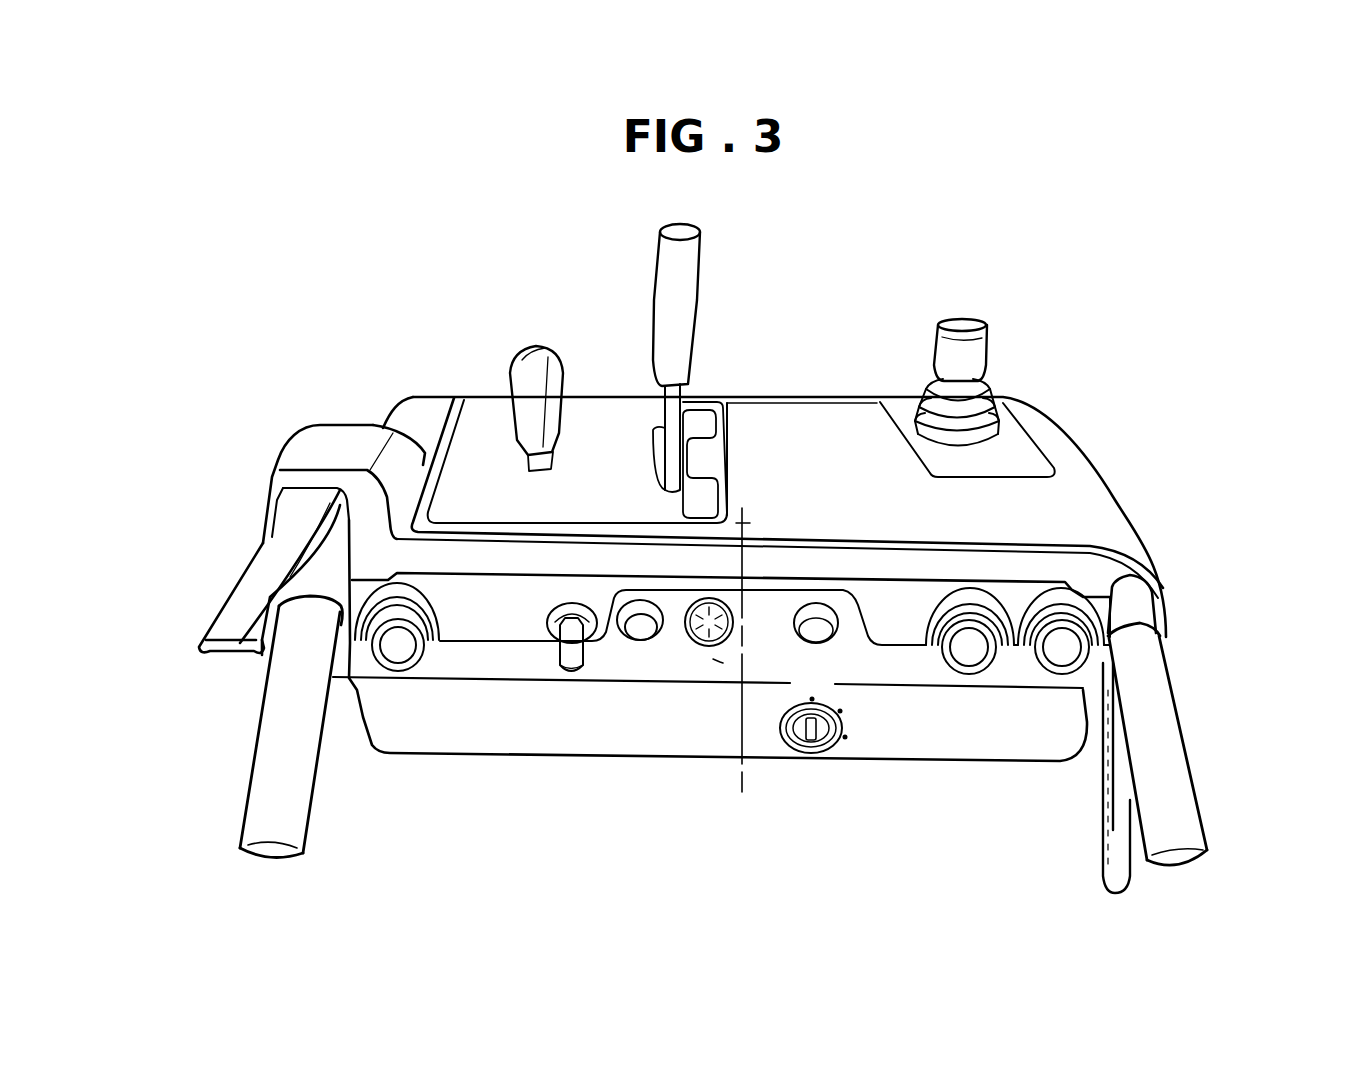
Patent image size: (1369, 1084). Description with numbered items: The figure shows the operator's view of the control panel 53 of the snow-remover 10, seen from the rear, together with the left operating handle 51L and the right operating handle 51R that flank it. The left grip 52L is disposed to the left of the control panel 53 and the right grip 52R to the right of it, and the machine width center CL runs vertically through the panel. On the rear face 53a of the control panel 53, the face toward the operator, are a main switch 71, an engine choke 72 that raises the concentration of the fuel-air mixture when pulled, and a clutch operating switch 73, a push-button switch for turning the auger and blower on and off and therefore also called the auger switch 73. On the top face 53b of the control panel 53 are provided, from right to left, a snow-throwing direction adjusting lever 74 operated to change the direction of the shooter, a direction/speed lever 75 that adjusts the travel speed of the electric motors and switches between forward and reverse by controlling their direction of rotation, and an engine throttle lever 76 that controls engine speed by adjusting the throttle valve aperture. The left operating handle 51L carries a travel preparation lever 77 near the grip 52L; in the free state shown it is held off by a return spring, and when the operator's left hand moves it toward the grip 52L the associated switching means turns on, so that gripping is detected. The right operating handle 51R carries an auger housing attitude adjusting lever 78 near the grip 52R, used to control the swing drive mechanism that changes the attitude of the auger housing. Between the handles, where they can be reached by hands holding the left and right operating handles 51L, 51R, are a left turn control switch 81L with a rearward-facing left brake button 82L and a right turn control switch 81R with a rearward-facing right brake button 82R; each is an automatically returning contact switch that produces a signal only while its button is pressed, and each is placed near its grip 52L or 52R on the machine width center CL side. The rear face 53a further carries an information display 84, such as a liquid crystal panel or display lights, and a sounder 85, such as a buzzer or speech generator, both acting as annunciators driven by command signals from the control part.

The snow-remover 10 is at (226, 236).
The left operating handle 51L is at (320, 577).
The right operating handle 51R is at (1140, 608).
The left grip 52L is at (290, 728).
The right grip 52R is at (1162, 707).
The control panel 53 is at (414, 395).
The rear face of the control panel 53a is at (720, 662).
The top face of the control panel 53b is at (485, 413).
The main switch 71 is at (833, 752).
The engine choke 72 is at (570, 672).
The clutch operating switch 73 is at (968, 665).
The snow-throwing direction adjusting lever 74 is at (967, 332).
The direction/speed lever 75 is at (688, 277).
The engine throttle lever 76 is at (537, 358).
The travel preparation lever 77 is at (230, 617).
The auger housing attitude adjusting lever 78 is at (1123, 823).
The left turn control switch 81L is at (393, 675).
The right turn control switch 81R is at (1042, 672).
The left brake button 82L is at (408, 650).
The right brake button 82R is at (1063, 667).
The information display 84 is at (637, 638).
The sounder 85 is at (690, 645).
The machine width center CL is at (747, 523).